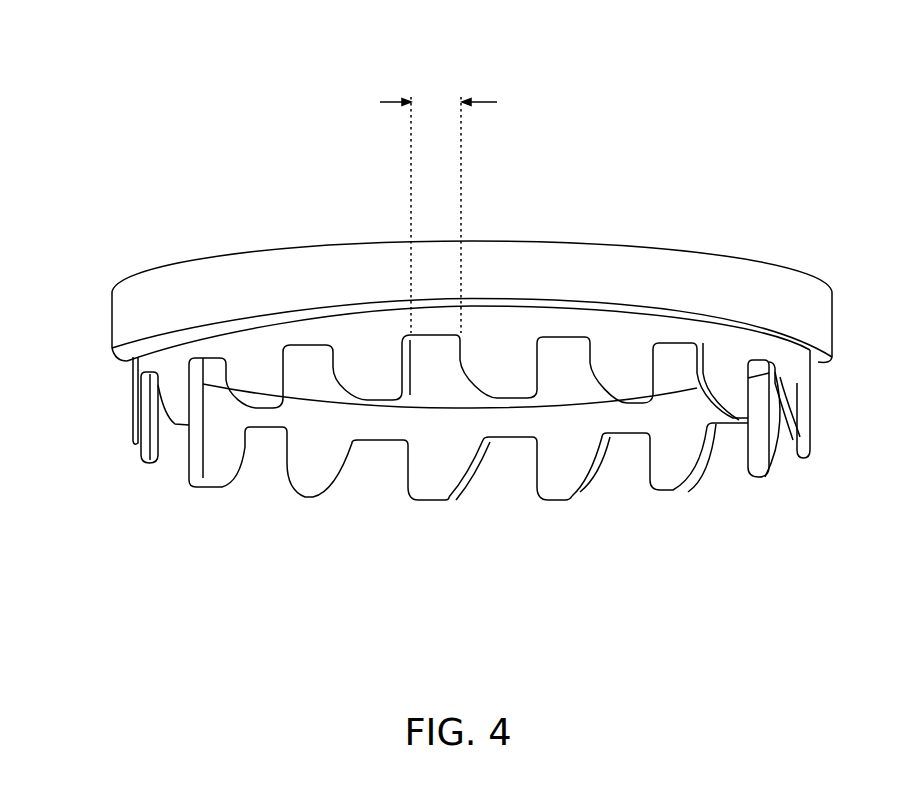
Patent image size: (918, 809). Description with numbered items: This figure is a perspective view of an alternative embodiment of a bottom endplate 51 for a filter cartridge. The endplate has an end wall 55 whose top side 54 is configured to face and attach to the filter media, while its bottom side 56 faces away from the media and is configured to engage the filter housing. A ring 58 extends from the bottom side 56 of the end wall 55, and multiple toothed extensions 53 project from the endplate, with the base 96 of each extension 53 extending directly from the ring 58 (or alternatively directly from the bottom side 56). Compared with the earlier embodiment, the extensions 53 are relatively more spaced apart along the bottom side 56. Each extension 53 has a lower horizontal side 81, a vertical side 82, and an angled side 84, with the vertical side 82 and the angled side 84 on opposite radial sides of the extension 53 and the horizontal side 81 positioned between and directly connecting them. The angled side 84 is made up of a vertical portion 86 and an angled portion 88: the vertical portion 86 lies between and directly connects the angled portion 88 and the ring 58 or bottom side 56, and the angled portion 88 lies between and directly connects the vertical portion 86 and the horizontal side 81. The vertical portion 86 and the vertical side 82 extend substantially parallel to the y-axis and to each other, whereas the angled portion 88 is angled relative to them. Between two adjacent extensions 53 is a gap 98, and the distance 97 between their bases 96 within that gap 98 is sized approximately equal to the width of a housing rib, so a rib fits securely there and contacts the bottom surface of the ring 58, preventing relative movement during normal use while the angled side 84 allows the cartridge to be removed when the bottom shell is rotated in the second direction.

The bottom endplate 51 is at (437, 282).
The extensions 53 is at (471, 409).
The top side 54 is at (262, 250).
The end wall 55 is at (114, 318).
The bottom side 56 is at (317, 385).
The ring 58 is at (138, 358).
The lower horizontal side 81 is at (558, 503).
The vertical side 82 is at (530, 468).
The angled side 84 is at (617, 452).
The vertical portion 86 is at (618, 448).
The angled portion 88 is at (606, 474).
The base 96 is at (385, 363).
The distance 97 is at (488, 100).
The gap 98 is at (483, 497).